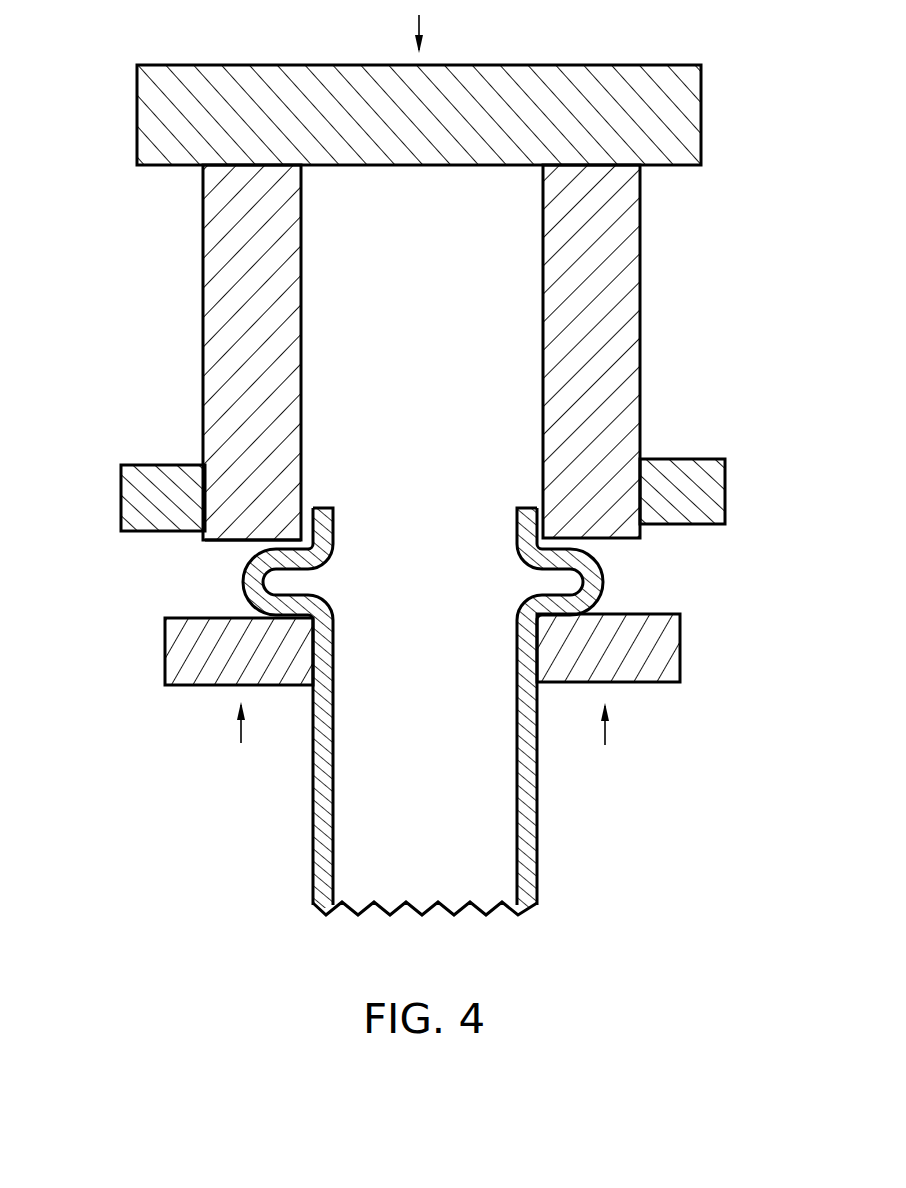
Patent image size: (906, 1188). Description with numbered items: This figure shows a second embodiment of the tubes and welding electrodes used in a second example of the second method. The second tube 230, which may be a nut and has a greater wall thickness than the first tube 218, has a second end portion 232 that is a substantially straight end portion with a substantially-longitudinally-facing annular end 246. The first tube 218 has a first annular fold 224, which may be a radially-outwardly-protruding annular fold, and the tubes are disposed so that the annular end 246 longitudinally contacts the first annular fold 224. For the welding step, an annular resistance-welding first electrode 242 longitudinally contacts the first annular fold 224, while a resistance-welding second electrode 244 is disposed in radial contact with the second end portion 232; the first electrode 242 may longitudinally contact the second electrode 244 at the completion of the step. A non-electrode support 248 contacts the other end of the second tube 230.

The non-electrode support 248 is at (692, 116).
The second tube 230 is at (409, 329).
The second end portion 232 is at (303, 480).
The second electrode 244 is at (130, 498).
The annular end 246 is at (236, 542).
The first annular fold 224 is at (603, 580).
The first electrode 242 is at (673, 650).
The first tube 218 is at (469, 712).